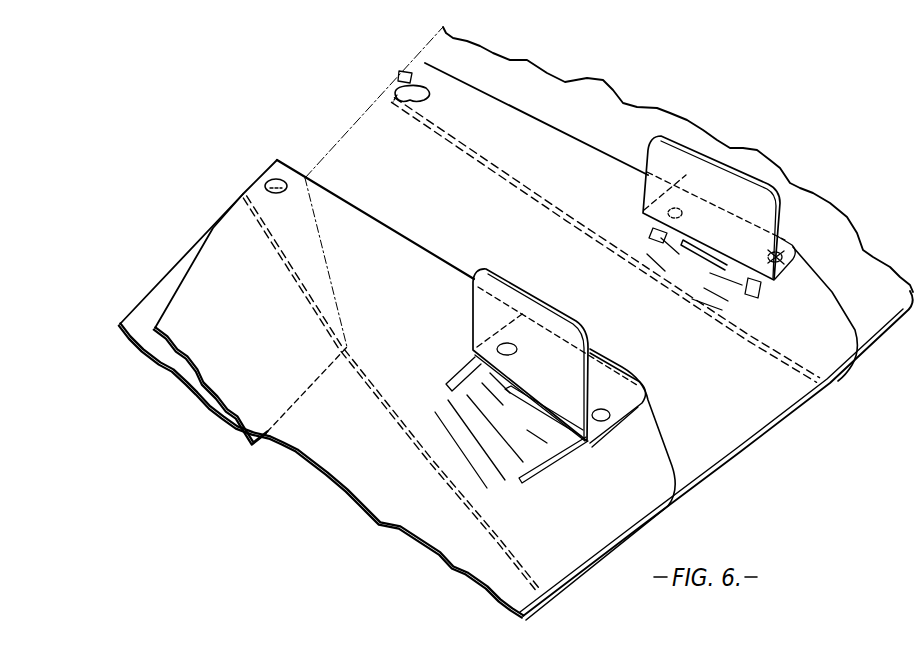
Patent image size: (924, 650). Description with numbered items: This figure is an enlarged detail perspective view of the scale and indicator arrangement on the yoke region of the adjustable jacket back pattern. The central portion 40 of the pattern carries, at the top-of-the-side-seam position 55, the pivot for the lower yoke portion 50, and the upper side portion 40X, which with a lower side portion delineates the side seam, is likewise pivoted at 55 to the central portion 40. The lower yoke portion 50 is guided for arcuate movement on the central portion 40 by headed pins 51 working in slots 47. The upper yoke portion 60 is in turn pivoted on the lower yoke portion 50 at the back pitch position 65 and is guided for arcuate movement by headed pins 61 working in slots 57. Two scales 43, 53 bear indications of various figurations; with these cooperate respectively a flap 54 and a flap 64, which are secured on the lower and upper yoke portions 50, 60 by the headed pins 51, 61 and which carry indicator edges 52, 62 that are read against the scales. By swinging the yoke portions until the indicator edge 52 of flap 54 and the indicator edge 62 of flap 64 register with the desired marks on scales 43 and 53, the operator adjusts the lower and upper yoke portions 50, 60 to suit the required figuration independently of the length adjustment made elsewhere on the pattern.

The central portion 40 is at (353, 457).
The upper side portion 40X is at (243, 423).
The lower yoke portion 50 is at (418, 200).
The upper yoke portion 60 is at (570, 108).
The top of the side seam pivot position 55 is at (281, 179).
The back pitch pivot position 65 is at (392, 97).
The flap 54 is at (477, 308).
The headed pins 51 is at (604, 421).
The indicator edge 52 is at (518, 392).
The slots 47 is at (458, 378).
The scale 43 is at (497, 483).
The flap 64 is at (655, 162).
The slots 57 is at (652, 232).
The headed pins 61 is at (787, 252).
The indicator edge 62 is at (700, 258).
The scale 53 is at (728, 299).